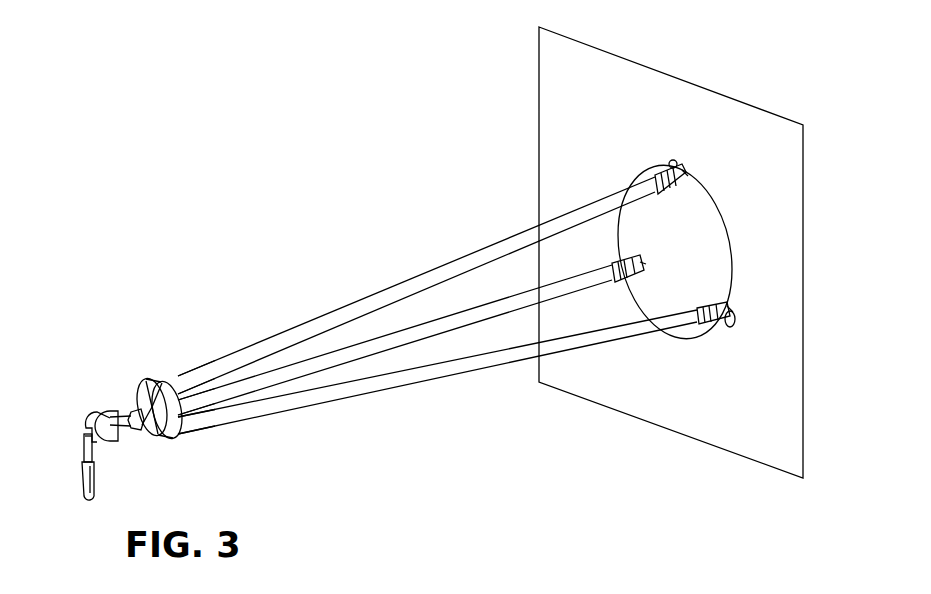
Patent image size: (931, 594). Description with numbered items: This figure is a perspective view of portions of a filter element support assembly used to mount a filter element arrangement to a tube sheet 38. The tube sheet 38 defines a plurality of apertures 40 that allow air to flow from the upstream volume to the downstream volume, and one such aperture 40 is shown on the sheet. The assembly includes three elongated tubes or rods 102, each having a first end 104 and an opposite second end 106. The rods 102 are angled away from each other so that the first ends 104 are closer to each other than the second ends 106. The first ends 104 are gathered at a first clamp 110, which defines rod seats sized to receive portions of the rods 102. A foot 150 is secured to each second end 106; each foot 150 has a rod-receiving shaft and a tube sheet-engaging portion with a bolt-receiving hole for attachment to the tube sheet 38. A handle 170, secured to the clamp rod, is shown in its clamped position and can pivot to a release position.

The tube sheet 38 is at (737, 110).
The aperture 40 is at (693, 340).
The rod 102 is at (453, 373).
The first end 104 is at (190, 410).
The second end 106 is at (697, 312).
The first clamp 110 is at (142, 404).
The foot 150 is at (652, 262).
The handle 170 is at (83, 482).